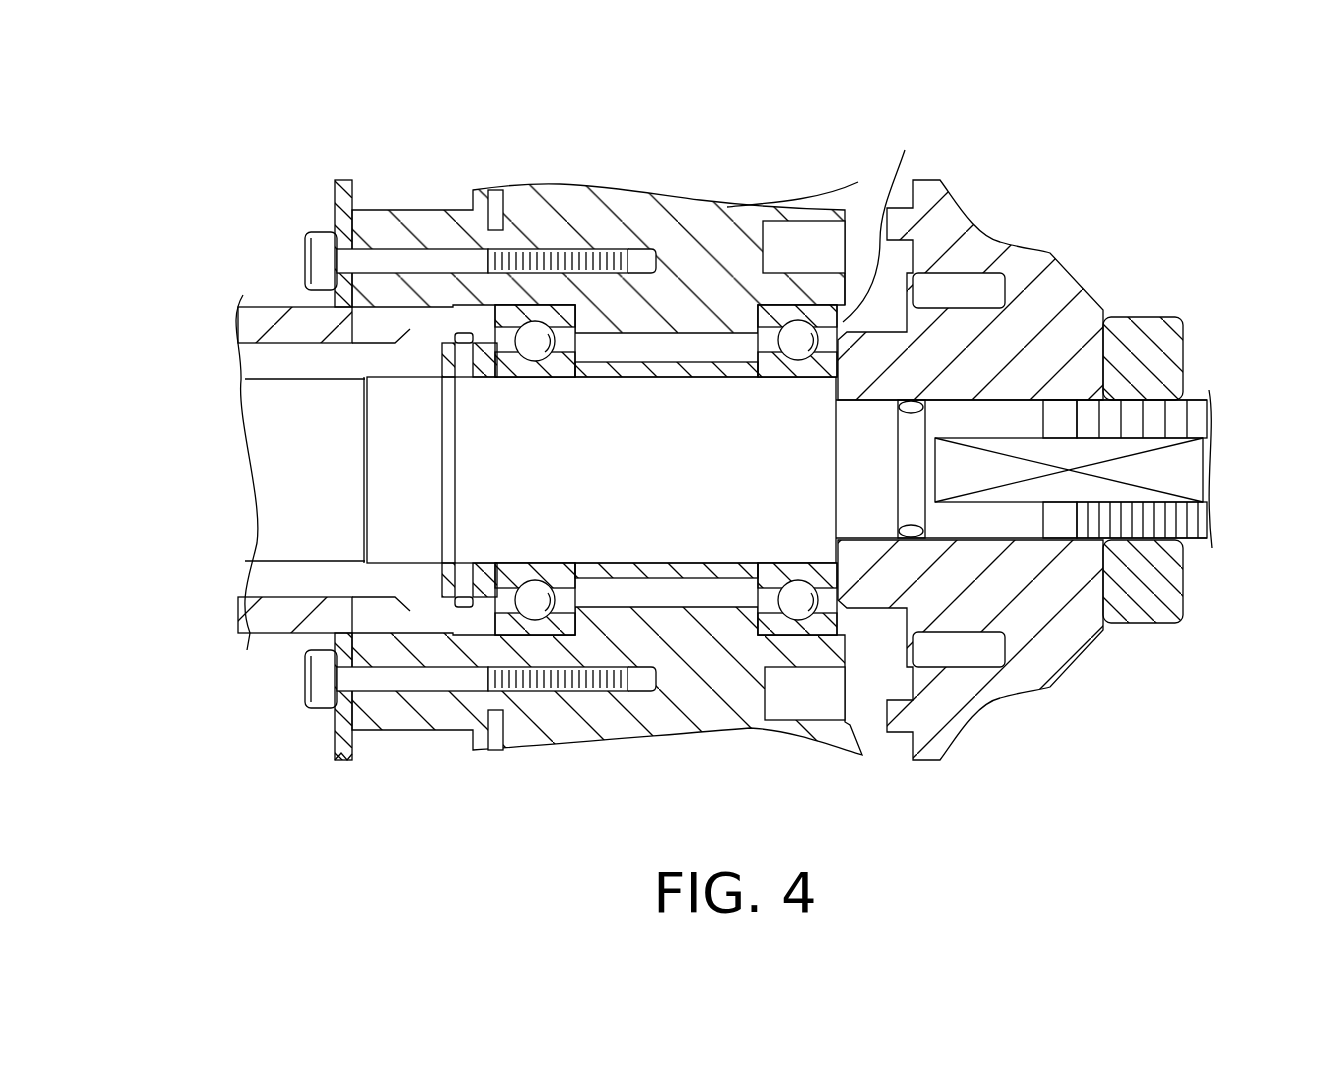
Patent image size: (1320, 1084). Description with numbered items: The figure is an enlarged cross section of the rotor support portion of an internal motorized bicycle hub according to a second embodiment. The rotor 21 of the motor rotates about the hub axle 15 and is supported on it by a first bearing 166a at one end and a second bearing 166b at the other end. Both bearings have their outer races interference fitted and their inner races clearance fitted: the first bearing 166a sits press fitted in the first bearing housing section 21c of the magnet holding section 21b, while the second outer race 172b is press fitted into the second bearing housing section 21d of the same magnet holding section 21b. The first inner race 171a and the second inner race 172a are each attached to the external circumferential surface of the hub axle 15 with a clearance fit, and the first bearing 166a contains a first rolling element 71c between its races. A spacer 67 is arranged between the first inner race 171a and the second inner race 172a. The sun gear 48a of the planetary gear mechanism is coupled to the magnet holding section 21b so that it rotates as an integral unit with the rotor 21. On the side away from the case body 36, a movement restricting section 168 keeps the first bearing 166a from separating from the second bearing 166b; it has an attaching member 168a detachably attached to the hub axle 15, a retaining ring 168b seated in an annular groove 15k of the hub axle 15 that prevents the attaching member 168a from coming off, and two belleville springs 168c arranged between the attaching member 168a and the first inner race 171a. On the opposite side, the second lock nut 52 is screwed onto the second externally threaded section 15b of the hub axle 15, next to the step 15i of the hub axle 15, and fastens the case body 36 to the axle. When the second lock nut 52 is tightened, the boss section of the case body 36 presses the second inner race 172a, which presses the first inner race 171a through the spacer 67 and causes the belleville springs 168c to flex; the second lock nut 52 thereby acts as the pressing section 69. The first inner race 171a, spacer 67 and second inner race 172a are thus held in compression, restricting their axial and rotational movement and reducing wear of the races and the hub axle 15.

The hub axle 15 is at (290, 372).
The second externally threaded section 15b is at (1153, 412).
The step 15i is at (836, 517).
The annular groove 15k is at (440, 472).
The rotor 21 is at (698, 188).
The magnet holding section 21b is at (807, 429).
The first bearing housing section 21c is at (447, 357).
The second bearing housing section 21d is at (887, 240).
The case body 36 is at (1040, 235).
The sun gear 48a is at (273, 313).
The second lock nut 52 is at (1153, 340).
The spacer 67 is at (650, 363).
The pressing section 69 is at (1133, 305).
The first rolling element 71c is at (485, 640).
The first bearing 166a is at (530, 298).
The second bearing 166b is at (810, 290).
The movement restricting section 168 is at (440, 372).
The attaching member 168a is at (342, 697).
The retaining ring 168b is at (452, 586).
The belleville springs 168c is at (487, 628).
The first inner race 171a is at (560, 573).
The second inner race 172a is at (760, 587).
The second outer race 172b is at (782, 618).